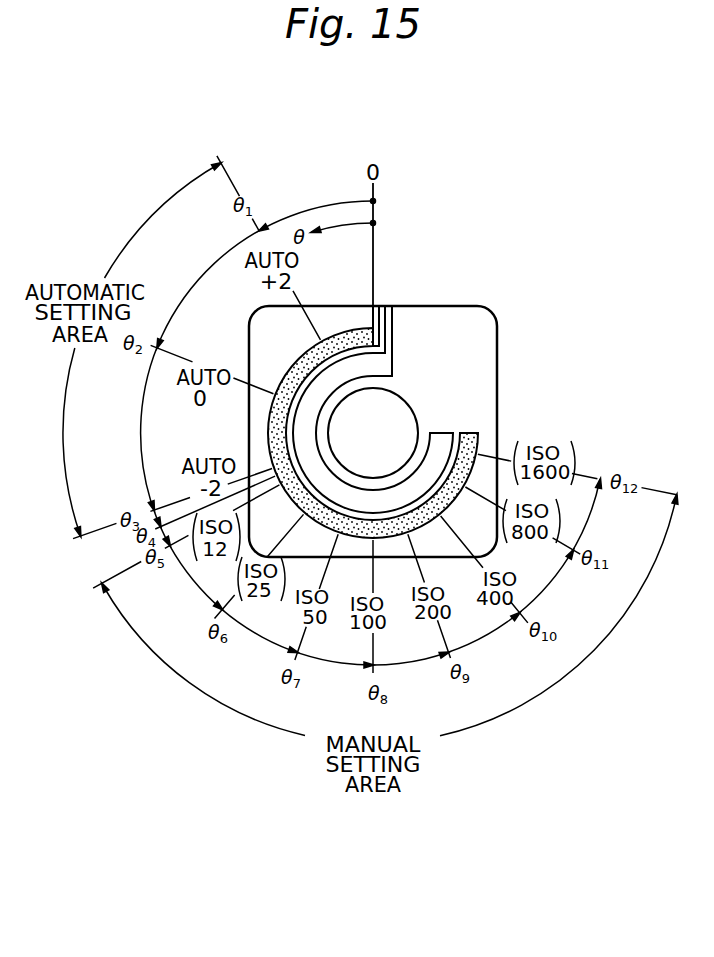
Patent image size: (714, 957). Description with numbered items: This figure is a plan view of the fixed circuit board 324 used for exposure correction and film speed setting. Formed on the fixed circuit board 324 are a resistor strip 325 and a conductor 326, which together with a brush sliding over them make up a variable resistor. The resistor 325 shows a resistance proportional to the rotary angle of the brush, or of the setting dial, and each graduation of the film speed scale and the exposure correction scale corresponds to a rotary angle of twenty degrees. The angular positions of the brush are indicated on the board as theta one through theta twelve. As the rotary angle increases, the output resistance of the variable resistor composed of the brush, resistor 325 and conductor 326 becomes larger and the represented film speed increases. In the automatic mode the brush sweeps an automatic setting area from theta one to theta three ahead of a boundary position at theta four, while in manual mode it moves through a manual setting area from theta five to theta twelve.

The fixed circuit board 324 is at (488, 333).
The resistor strip 325 is at (468, 434).
The conductor 326 is at (440, 436).